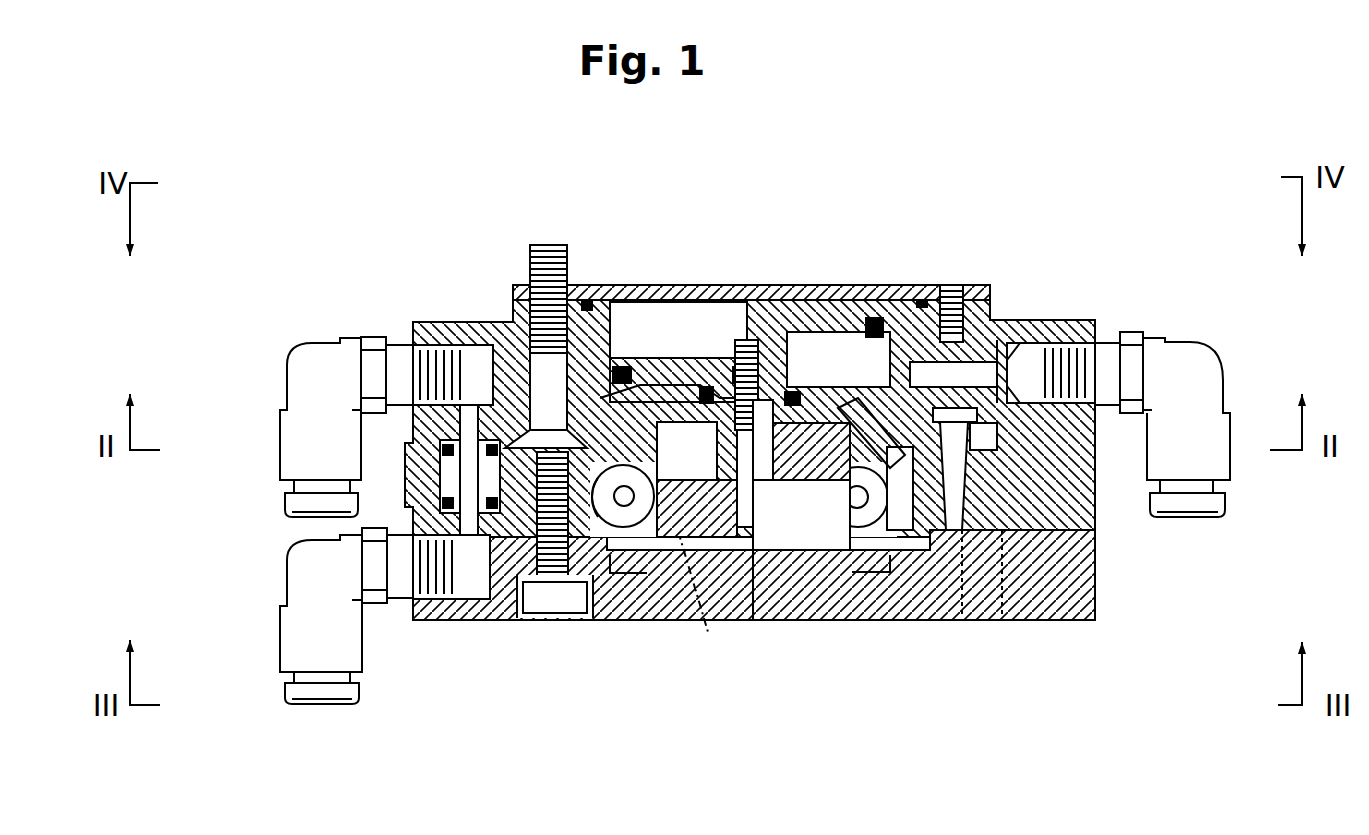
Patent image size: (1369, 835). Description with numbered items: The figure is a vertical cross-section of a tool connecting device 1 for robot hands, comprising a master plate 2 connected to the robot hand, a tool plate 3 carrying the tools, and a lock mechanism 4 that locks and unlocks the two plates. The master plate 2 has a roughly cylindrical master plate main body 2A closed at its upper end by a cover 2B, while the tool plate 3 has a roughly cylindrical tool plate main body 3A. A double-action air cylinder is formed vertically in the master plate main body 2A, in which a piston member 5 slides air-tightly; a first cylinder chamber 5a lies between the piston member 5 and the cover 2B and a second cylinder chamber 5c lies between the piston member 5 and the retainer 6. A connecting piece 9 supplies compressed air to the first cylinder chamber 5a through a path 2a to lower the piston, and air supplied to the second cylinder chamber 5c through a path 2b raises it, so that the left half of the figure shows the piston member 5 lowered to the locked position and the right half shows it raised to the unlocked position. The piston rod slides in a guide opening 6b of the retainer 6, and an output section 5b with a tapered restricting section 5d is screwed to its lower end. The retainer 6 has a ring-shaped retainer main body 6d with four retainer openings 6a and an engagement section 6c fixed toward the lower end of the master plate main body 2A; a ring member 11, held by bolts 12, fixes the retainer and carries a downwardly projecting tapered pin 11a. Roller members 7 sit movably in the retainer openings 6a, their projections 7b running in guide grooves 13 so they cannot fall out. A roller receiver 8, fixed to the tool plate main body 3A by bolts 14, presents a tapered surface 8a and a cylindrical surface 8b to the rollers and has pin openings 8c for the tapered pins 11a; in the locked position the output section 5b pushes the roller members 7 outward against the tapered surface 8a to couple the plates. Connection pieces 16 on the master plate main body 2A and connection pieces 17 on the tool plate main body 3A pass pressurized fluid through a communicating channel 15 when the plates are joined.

The tool connecting device 1 is at (300, 170).
The master plate 2 is at (484, 281).
The master plate main body 2A is at (418, 323).
The cover 2B is at (708, 297).
The path 2a is at (905, 430).
The path 2b is at (838, 285).
The tool plate 3 is at (517, 633).
The tool plate main body 3A is at (458, 625).
The lock mechanism 4 is at (705, 645).
The piston member 5 is at (648, 297).
The first cylinder chamber 5a is at (735, 347).
The output section 5b is at (733, 600).
The second cylinder chamber 5c is at (847, 380).
The tapered restricting section 5d is at (874, 600).
The retainer 6 is at (665, 545).
The retainer openings 6a is at (827, 618).
The guide opening 6b is at (687, 452).
The engagement section 6c is at (990, 350).
The retainer main body 6d is at (852, 572).
The roller members 7 is at (636, 555).
The projection 7b is at (801, 550).
The roller receiver 8 is at (543, 620).
The tapered surface 8a is at (597, 620).
The cylindrical surface 8b is at (905, 520).
The pin openings 8c is at (920, 490).
The connecting piece 9 is at (1184, 358).
The ring member 11 is at (478, 350).
The tapered pin 11a is at (1000, 530).
The bolts 12 is at (548, 245).
The guide grooves 13 is at (660, 556).
The bolts 14 is at (565, 614).
The communicating channel 15 is at (440, 478).
The connection pieces 16 is at (336, 368).
The connection pieces 17 is at (315, 587).